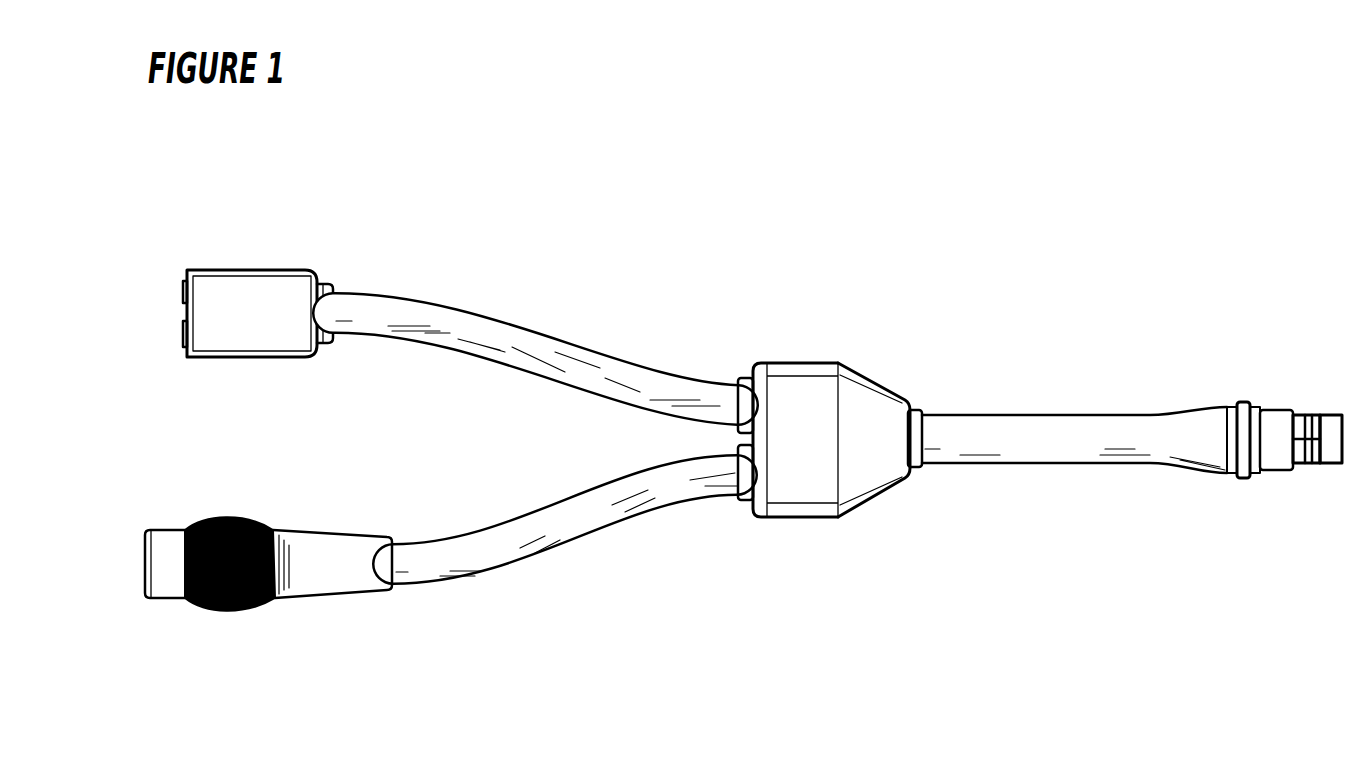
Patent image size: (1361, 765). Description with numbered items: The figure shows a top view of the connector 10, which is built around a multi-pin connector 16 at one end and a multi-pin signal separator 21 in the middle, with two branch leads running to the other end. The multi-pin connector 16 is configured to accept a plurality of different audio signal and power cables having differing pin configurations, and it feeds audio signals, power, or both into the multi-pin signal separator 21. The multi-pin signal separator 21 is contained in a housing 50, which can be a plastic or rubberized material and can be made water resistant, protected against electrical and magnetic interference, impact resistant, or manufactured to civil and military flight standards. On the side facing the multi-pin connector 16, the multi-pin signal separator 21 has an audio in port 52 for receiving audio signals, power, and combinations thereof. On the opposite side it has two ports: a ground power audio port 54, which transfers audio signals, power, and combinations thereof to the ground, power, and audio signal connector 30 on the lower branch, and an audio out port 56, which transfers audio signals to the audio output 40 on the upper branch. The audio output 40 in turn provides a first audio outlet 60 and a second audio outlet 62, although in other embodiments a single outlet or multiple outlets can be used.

The connector 10 is at (1094, 119).
The multi-pin connector 16 is at (1282, 407).
The multi-pin signal separator 21 is at (855, 526).
The ground, power, and audio signal connector 30 is at (175, 600).
The audio output 40 is at (257, 270).
The housing 50 is at (810, 363).
The audio in port 52 is at (918, 410).
The ground power audio port 54 is at (747, 500).
The audio out port 56 is at (747, 378).
The first audio outlet 60 is at (185, 292).
The second audio outlet 62 is at (185, 337).